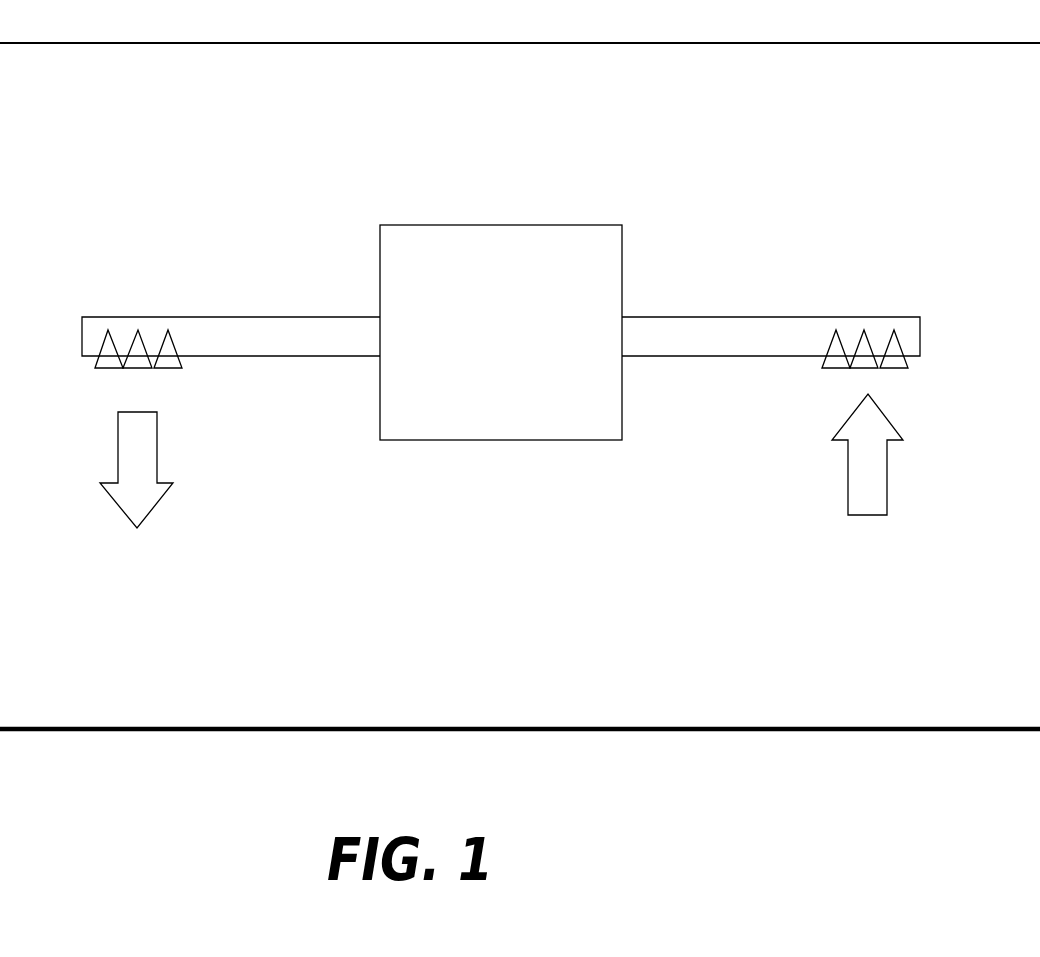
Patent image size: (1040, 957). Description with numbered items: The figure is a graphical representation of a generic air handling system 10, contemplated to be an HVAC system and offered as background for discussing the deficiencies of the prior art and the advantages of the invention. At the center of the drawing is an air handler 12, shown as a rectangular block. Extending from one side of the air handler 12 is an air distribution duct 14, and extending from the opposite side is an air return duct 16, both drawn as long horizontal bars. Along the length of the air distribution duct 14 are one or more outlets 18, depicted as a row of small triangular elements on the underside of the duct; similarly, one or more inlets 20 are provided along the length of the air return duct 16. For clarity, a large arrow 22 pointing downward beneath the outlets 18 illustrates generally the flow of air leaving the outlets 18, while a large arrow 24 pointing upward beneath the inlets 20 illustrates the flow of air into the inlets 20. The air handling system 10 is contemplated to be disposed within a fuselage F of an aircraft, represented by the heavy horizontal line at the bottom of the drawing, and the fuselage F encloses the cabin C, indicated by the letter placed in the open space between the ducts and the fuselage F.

The air handling system 10 is at (654, 146).
The air handler 12 is at (490, 345).
The air distribution duct 14 is at (228, 328).
The air return duct 16 is at (748, 328).
The outlets 18 is at (137, 369).
The inlets 20 is at (868, 369).
The arrow 22 is at (145, 468).
The arrow 24 is at (873, 487).
The cabin C is at (354, 605).
The fuselage F is at (112, 731).